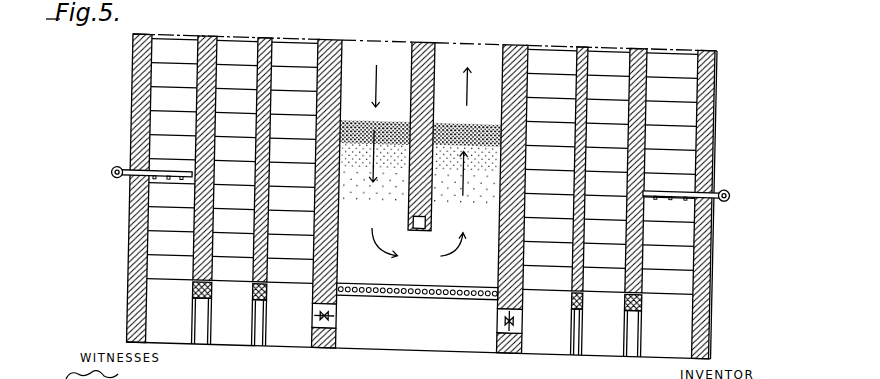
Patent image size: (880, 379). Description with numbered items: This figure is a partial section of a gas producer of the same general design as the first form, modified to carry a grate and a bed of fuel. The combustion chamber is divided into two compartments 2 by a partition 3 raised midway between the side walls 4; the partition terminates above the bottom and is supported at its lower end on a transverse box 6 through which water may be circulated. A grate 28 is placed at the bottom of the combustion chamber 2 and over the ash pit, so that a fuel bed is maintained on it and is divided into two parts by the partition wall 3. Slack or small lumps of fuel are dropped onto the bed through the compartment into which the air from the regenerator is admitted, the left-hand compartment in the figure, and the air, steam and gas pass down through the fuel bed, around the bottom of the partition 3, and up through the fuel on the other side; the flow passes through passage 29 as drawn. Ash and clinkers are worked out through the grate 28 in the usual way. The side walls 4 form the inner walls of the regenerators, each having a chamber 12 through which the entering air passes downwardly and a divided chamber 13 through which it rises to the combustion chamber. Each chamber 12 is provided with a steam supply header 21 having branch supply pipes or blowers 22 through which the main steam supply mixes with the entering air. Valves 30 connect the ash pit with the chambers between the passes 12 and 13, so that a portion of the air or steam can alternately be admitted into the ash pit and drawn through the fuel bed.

The combustion chamber compartment 2 is at (447, 41).
The partition 3 is at (412, 78).
The side wall 4 is at (343, 78).
The transverse box 6 is at (396, 243).
The regenerator chamber 12 is at (172, 159).
The divided regenerator chamber 13 is at (265, 161).
The steam supply header 21 is at (114, 173).
The branch supply pipe 22 is at (170, 170).
The grate 28 is at (425, 289).
The return passage 29 is at (461, 231).
The valve 30 is at (343, 310).